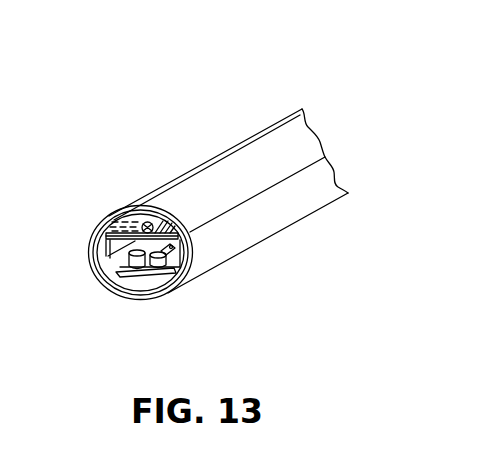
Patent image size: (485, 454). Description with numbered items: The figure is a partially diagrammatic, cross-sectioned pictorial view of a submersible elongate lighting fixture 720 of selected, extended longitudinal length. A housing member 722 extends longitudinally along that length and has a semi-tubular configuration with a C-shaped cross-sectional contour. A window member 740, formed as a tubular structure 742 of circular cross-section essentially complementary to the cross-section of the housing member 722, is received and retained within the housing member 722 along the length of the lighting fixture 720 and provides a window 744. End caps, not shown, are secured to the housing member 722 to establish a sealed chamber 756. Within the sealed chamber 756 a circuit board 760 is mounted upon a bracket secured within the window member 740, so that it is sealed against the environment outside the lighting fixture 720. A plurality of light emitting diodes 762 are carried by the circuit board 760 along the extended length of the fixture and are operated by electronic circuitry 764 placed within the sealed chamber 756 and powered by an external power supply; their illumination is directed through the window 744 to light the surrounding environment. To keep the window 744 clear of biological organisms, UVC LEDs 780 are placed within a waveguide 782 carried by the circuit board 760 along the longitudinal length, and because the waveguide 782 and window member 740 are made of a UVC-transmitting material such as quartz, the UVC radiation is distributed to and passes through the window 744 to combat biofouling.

The elongate lighting fixture 720 is at (303, 218).
The housing member 722 is at (240, 243).
The window member 740 is at (271, 149).
The tubular structure 742 is at (167, 290).
The window 744 is at (240, 160).
The sealed chamber 756 is at (108, 234).
The circuit board 760 is at (106, 241).
The light emitting diodes 762 is at (140, 222).
The electronic circuitry 764 is at (138, 270).
The UVC LEDs 780 is at (152, 222).
The waveguide 782 is at (160, 217).